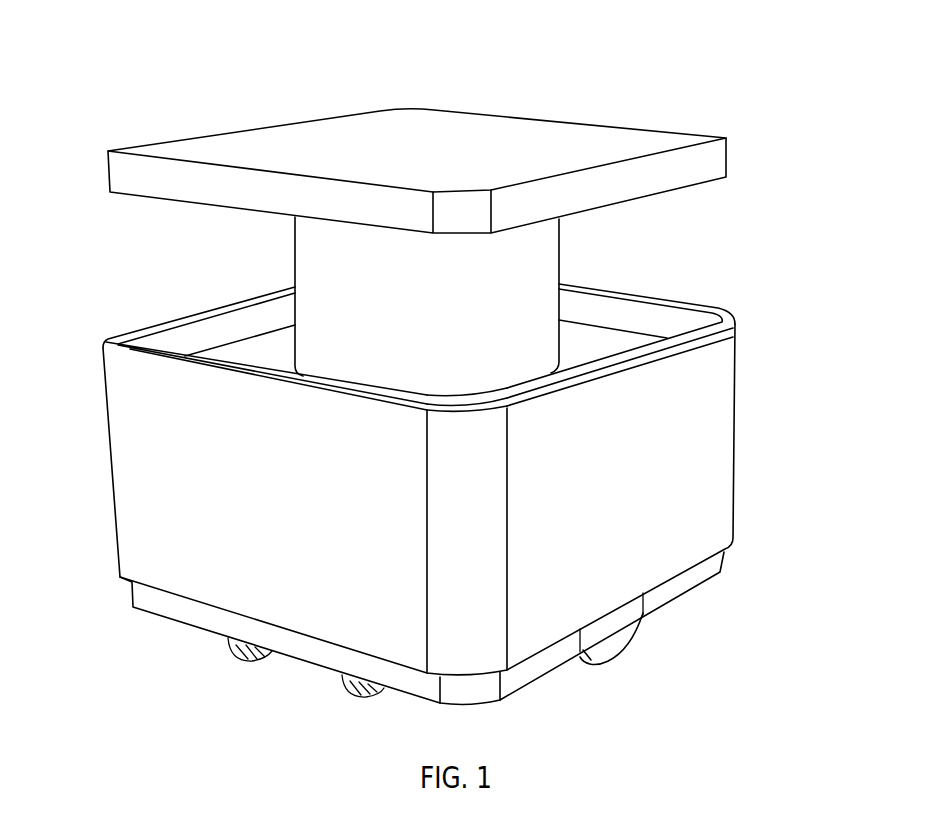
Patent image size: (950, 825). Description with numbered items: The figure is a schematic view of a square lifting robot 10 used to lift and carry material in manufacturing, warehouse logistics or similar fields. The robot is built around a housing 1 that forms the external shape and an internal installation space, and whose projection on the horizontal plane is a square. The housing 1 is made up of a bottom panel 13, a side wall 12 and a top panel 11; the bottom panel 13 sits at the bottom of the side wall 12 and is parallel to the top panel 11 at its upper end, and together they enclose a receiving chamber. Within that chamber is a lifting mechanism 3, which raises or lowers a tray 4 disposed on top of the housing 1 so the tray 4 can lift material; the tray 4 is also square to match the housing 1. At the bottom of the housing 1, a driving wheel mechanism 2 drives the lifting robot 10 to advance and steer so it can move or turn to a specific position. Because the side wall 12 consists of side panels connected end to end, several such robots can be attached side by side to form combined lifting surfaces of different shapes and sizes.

The lifting robot 10 is at (120, 85).
The housing 1 is at (828, 303).
The top panel 11 is at (582, 345).
The side wall 12 is at (678, 439).
The bottom panel 13 is at (686, 574).
The driving wheel mechanism 2 is at (242, 655).
The lifting mechanism 3 is at (304, 252).
The tray 4 is at (581, 142).